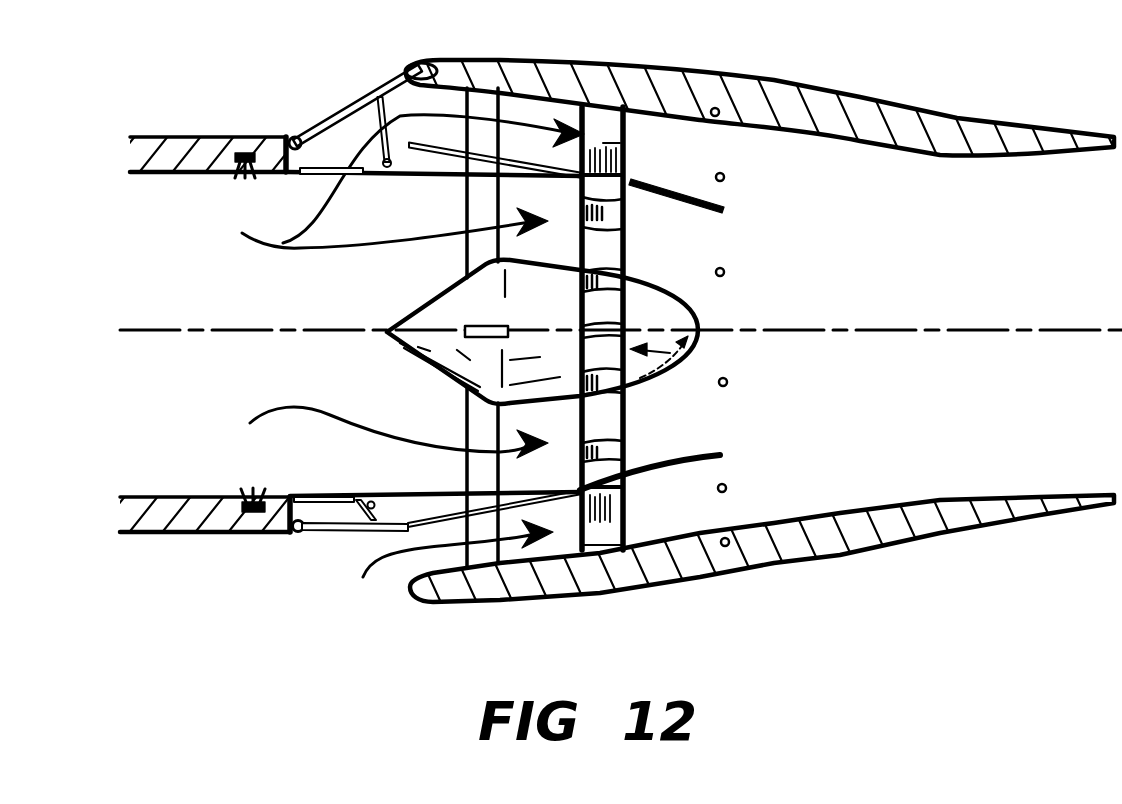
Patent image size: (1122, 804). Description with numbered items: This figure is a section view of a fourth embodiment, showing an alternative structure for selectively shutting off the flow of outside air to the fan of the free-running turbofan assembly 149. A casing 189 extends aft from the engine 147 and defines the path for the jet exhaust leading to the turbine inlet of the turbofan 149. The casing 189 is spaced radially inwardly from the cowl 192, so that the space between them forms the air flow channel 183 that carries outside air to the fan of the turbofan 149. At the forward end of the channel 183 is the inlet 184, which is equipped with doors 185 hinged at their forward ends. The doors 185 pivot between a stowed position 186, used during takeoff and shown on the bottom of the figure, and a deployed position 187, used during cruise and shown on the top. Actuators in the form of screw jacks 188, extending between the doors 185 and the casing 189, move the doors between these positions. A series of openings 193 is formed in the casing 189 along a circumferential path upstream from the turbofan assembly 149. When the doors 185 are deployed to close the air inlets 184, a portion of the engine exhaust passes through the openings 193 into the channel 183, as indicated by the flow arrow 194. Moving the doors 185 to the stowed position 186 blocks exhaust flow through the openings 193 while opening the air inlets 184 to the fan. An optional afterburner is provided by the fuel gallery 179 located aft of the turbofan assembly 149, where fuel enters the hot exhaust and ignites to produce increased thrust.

The engine 147 is at (285, 563).
The free-running turbofan assembly 149 is at (673, 367).
The fuel gallery 179 is at (727, 273).
The channel 183 is at (478, 105).
The inlet 184 is at (393, 572).
The doors 185 is at (317, 123).
The stowed position 186 is at (323, 563).
The deployed position 187 is at (392, 60).
The screw jacks 188 is at (370, 93).
The casing 189 is at (452, 174).
The cowl 192 is at (783, 80).
The openings 193 is at (310, 180).
The flow arrow 194 is at (435, 110).